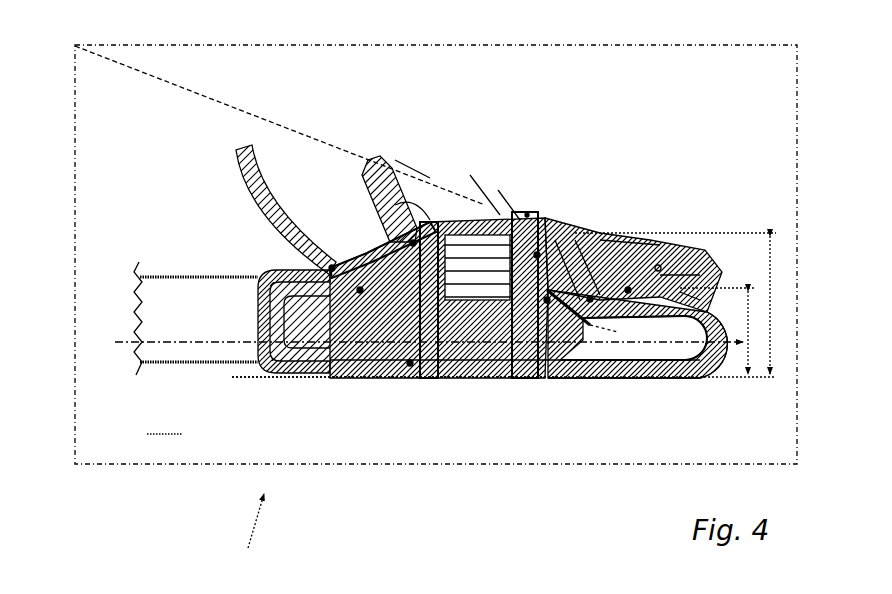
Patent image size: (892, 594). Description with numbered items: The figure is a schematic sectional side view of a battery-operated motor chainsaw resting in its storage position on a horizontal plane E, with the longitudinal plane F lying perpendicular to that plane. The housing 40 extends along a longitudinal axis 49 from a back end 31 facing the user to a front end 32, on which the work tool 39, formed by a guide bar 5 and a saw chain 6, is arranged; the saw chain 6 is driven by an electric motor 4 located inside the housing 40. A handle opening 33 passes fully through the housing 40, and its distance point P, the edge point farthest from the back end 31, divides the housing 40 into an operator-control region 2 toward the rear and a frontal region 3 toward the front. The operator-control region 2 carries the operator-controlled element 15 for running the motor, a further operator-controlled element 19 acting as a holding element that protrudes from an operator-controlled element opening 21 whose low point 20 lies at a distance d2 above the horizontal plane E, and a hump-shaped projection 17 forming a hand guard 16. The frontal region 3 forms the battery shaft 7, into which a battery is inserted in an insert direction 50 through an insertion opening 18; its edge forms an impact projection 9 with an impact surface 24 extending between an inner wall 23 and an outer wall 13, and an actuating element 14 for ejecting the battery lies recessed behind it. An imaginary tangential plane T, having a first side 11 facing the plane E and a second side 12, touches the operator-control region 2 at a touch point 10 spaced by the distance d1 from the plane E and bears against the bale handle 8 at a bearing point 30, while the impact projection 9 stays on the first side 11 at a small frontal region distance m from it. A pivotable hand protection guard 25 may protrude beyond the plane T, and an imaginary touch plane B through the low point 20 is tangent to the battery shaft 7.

The operator-control region 2 is at (600, 240).
The frontal region 3 is at (492, 236).
The electric motor 4 is at (407, 371).
The guide bar 5 is at (165, 362).
The saw chain 6 is at (180, 364).
The battery shaft 7 is at (472, 237).
The bale handle 8 is at (395, 207).
The impact projection 9 is at (537, 230).
The touch point 10 is at (587, 227).
The first side 11 is at (195, 107).
The second side 12 is at (195, 90).
The outer wall 13 is at (545, 235).
The actuating element 14 is at (560, 237).
The operator-controlled element 15 is at (612, 333).
The hand guard 16 is at (668, 270).
The projection 17 is at (575, 238).
The insertion opening 18 is at (433, 222).
The further operator-controlled element 19 is at (690, 272).
The low point 20 is at (688, 292).
The operator-controlled element opening 21 is at (664, 268).
The inner wall 23 is at (488, 182).
The impact surface 24 is at (498, 190).
The hand protection guard 25 is at (247, 183).
The bearing point 30 is at (385, 154).
The back end 31 is at (745, 347).
The front end 32 is at (254, 320).
The handle opening 33 is at (671, 353).
The work tool 39 is at (164, 444).
The housing 40 is at (642, 379).
The longitudinal axis 49 is at (136, 343).
The insert direction 50 is at (478, 171).
The imaginary tangential plane T is at (300, 128).
The imaginary touch plane B is at (418, 160).
The frontal region distance m is at (527, 205).
The distance point P is at (565, 379).
The horizontal plane E is at (240, 379).
The longitudinal plane F is at (188, 465).
The distance of the touch point to the horizontal plane d1 is at (780, 305).
The distance of the low point to the horizontal plane d2 is at (759, 332).